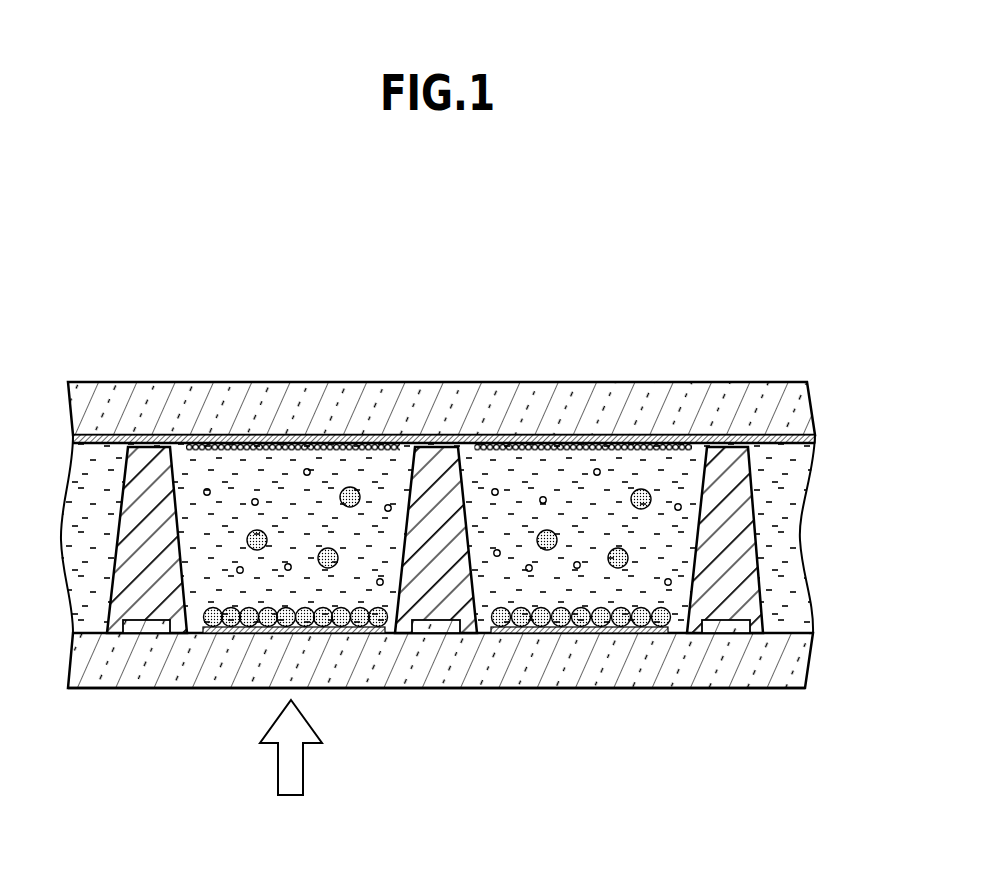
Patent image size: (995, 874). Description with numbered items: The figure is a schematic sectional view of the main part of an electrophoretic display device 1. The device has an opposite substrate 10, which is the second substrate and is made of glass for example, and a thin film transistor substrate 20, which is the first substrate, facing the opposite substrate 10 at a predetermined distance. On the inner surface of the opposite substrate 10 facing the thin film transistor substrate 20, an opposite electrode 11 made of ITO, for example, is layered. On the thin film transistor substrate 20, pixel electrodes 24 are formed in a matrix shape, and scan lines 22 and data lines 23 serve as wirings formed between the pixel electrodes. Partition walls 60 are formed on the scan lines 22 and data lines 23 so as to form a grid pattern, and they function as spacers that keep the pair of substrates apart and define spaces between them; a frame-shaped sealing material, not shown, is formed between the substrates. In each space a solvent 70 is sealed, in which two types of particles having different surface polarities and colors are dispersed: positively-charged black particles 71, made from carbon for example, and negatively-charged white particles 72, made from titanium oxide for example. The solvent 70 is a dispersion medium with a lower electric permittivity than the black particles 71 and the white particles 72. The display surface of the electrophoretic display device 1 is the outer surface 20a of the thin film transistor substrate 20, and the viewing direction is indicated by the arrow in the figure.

The electrophoretic display device 1 is at (534, 254).
The opposite substrate 10 is at (437, 378).
The opposite electrode 11 is at (768, 442).
The thin film transistor substrate 20 is at (529, 694).
The outer surface 20a is at (758, 690).
The scan lines 22 is at (415, 694).
The data lines 23 is at (142, 628).
The pixel electrodes 24 is at (222, 633).
The partition walls 60 is at (137, 543).
The solvent 70 is at (193, 535).
The black particles 71 is at (252, 532).
The white particles 72 is at (204, 490).